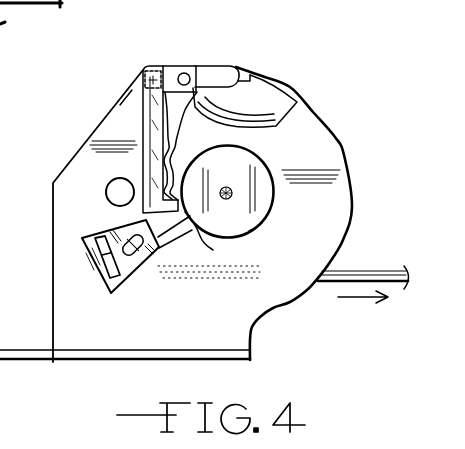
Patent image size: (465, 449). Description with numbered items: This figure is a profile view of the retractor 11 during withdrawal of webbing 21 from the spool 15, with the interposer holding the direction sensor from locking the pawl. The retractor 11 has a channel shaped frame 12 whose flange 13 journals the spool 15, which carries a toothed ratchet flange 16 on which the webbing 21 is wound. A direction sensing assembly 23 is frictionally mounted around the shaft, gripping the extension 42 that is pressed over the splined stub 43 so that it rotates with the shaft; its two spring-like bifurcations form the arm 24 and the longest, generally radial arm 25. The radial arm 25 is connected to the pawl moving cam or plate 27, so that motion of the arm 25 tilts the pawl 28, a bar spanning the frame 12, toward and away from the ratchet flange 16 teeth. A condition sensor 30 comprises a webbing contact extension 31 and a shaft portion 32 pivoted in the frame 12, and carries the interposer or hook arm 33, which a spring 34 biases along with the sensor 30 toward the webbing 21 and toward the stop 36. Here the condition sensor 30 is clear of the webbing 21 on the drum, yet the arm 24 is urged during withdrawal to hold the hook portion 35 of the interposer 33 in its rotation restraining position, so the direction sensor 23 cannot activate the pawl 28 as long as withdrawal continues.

The retractor 11 is at (385, 185).
The frame 12 is at (94, 343).
The flange 13 is at (335, 154).
The spool 15 is at (309, 76).
The ratchet flange 16 is at (268, 106).
The webbing 21 is at (364, 273).
The direction sensing assembly 23 is at (268, 249).
The arm 24 is at (190, 164).
The arm 25 is at (168, 228).
The pawl moving cam or plate 27 is at (135, 275).
The pawl 28 is at (102, 277).
The condition sensor 30 is at (223, 50).
The webbing contact extension 31 is at (231, 69).
The shaft portion 32 is at (143, 80).
The interposer or hook arm 33 is at (143, 96).
The spring 34 is at (180, 133).
The hook portion 35 is at (200, 240).
The stop 36 is at (107, 189).
The extension 42 is at (258, 227).
The splined stub 43 is at (232, 192).